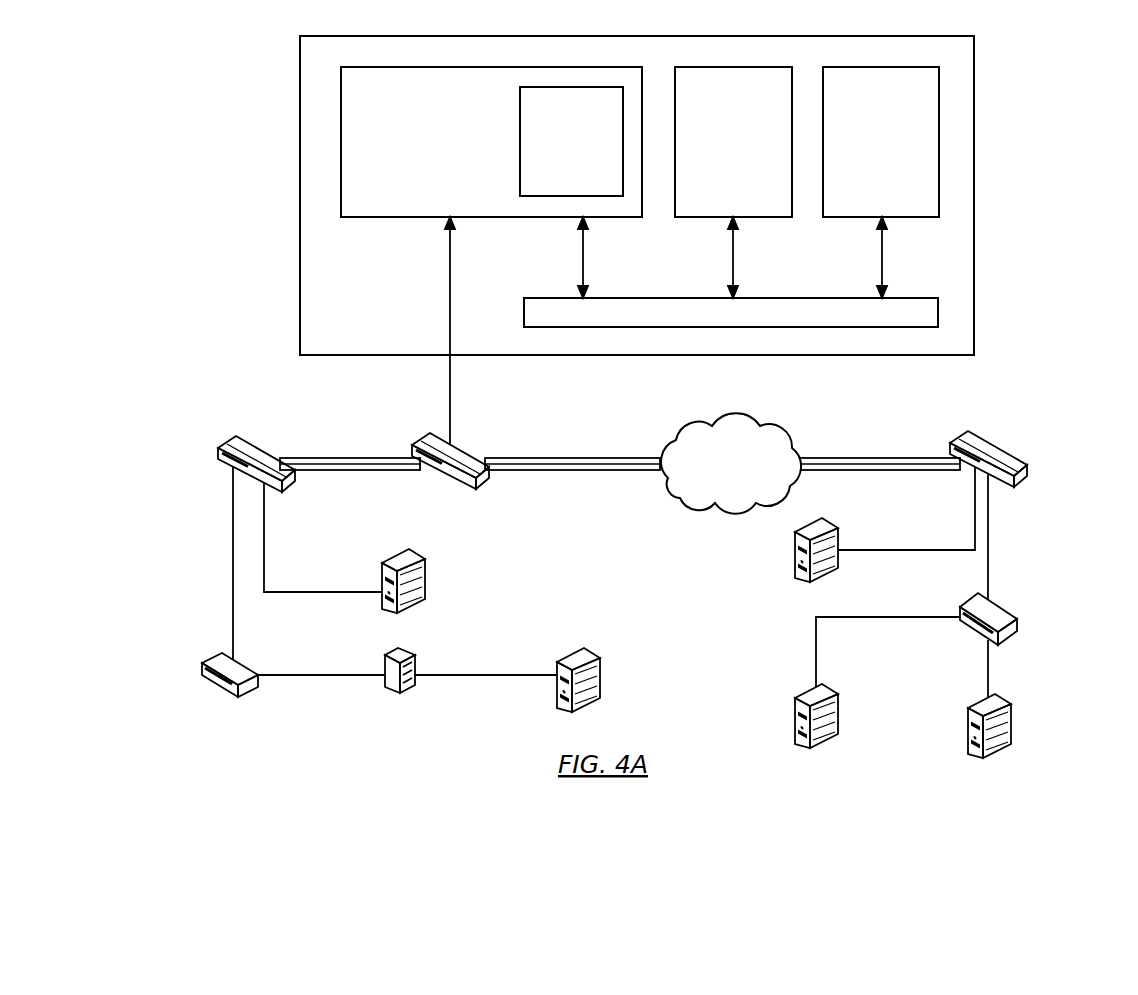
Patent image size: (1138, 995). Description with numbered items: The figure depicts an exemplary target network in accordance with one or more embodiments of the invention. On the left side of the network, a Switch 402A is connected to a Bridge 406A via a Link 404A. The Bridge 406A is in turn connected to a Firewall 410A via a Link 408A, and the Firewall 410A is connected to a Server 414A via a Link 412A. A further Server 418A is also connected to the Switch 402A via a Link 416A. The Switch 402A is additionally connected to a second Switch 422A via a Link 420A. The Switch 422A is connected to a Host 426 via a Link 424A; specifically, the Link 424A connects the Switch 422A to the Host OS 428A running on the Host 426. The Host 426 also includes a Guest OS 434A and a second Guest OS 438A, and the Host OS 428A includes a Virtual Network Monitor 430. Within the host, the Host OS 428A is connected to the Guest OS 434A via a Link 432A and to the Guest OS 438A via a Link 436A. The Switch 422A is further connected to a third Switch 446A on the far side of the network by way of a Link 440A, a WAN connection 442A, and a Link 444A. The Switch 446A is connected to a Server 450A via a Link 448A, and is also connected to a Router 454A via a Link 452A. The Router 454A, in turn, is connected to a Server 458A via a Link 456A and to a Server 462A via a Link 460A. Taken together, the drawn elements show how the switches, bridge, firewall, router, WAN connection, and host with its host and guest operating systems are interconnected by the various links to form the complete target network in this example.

The switch 402A is at (209, 451).
The link 404A is at (192, 563).
The bridge 406A is at (187, 660).
The link 408A is at (321, 651).
The firewall 410A is at (357, 689).
The link 412A is at (486, 651).
The server 414A is at (536, 693).
The link 416A is at (323, 537).
The server 418A is at (446, 576).
The link 420A is at (350, 441).
The switch 422A is at (493, 479).
The link 424A is at (487, 331).
The host 426 is at (637, 195).
The host OS 428A is at (491, 142).
The virtual network monitor 430 is at (571, 141).
The link 432A is at (697, 257).
The guest OS 434A is at (733, 142).
The link 436A is at (846, 257).
The guest OS 438A is at (881, 142).
The link 440A is at (572, 439).
The WAN connection 442A is at (731, 463).
The link 444A is at (880, 439).
The switch 446A is at (1022, 455).
The link 448A is at (906, 508).
The server 450A is at (774, 550).
The link 452A is at (1028, 537).
The router 454A is at (944, 608).
The link 456A is at (848, 648).
The server 458A is at (774, 715).
The link 460A is at (1028, 669).
The server 462A is at (946, 723).